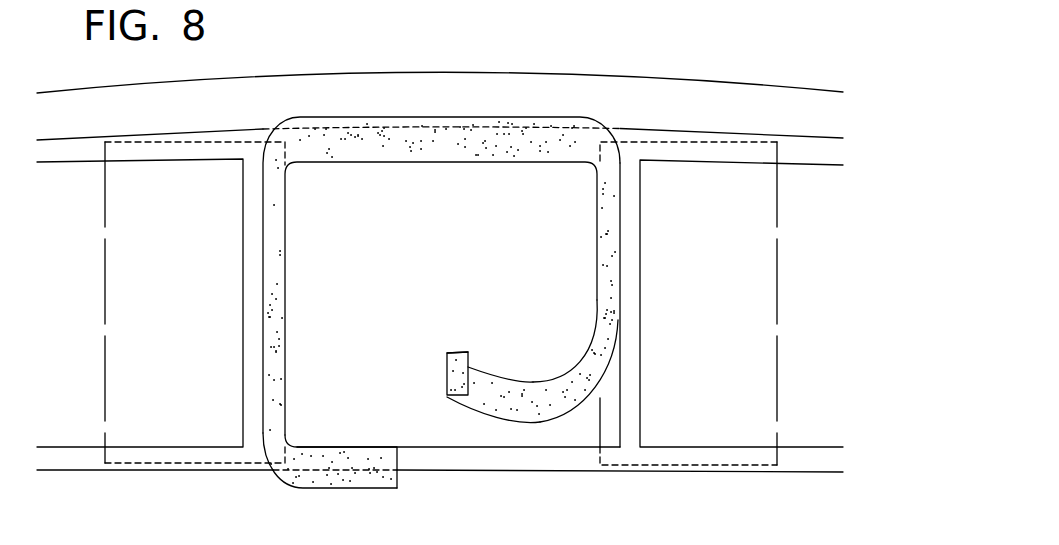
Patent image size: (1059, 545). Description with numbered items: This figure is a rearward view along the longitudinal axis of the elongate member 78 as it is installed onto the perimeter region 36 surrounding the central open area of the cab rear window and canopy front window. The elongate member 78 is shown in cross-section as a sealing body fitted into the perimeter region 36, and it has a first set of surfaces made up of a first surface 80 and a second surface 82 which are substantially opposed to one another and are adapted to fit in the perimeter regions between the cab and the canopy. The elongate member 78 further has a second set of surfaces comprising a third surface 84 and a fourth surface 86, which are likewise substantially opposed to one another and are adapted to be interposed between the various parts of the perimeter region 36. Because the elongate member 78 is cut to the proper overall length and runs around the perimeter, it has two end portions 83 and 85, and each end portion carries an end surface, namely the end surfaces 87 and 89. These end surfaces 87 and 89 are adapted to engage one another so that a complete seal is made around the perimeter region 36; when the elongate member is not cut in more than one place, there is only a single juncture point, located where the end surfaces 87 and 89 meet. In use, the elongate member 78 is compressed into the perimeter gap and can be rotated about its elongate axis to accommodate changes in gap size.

The perimeter region 36 is at (385, 135).
The elongate member 78 is at (497, 135).
The first surface 80 is at (607, 280).
The second surface 82 is at (467, 402).
The end portion 83 is at (470, 368).
The third surface 84 is at (447, 374).
The end portion 85 is at (380, 457).
The fourth surface 86 is at (538, 413).
The end surface 87 is at (455, 360).
The end surface 89 is at (397, 474).